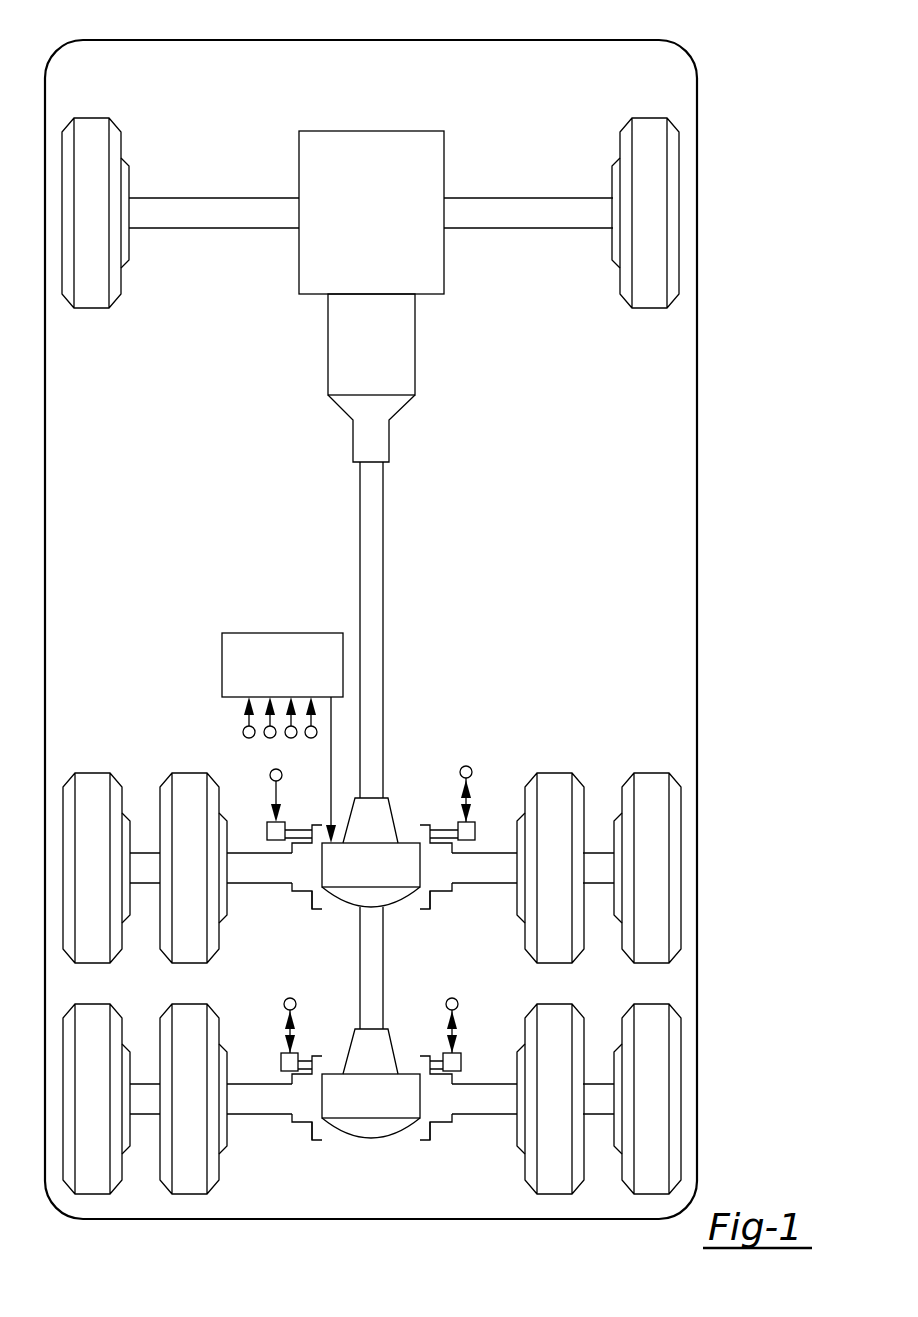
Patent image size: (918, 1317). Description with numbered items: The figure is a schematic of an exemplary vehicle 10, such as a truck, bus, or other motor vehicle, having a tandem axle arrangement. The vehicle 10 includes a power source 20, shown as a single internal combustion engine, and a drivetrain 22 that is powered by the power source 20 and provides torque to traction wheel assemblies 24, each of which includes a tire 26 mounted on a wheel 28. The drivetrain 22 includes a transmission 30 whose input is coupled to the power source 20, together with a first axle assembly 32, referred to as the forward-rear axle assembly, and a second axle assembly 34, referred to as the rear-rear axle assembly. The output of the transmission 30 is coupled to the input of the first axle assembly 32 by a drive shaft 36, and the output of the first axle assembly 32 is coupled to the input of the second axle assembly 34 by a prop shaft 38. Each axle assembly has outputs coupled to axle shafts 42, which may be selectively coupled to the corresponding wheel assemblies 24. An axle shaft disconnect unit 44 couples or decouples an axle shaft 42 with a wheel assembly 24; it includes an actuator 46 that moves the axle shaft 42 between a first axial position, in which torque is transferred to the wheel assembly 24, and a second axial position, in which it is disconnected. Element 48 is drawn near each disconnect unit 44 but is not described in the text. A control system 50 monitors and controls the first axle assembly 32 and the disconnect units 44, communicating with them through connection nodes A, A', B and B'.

The vehicle 10 is at (688, 49).
The power source 20 is at (360, 226).
The drivetrain 22 is at (319, 399).
The traction wheel assembly 24 is at (93, 963).
The tire 26 is at (84, 880).
The wheel 28 is at (130, 900).
The transmission 30 is at (361, 361).
The first axle assembly 32 is at (396, 802).
The second axle assembly 34 is at (353, 1040).
The drive shaft 36 is at (383, 536).
The prop shaft 38 is at (383, 981).
The axle shaft 42 is at (147, 853).
The axle shaft disconnect unit 44 is at (311, 893).
The actuator 46 is at (267, 826).
The brake actuators 48 is at (317, 909).
The control system 50 is at (272, 681).